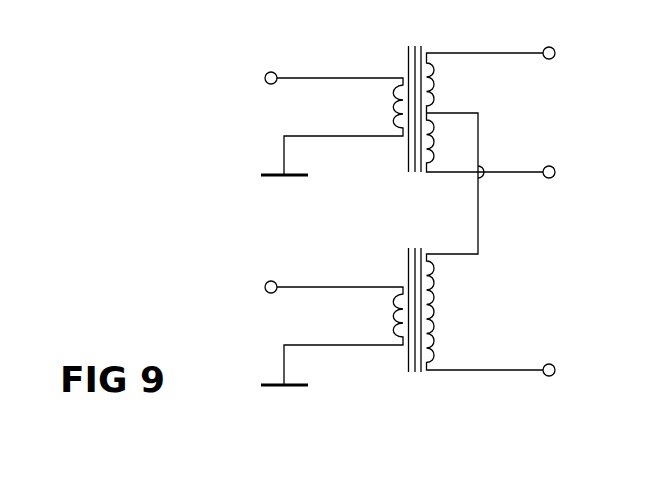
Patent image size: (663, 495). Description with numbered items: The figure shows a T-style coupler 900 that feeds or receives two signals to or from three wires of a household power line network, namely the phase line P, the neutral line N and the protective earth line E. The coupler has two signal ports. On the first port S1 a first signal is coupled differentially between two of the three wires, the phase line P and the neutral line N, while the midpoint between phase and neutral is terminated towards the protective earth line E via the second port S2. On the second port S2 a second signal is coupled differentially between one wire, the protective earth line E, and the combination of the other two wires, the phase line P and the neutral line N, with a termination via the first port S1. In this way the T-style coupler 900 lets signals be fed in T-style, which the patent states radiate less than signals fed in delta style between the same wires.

The T-style coupler 900 is at (196, 206).
The first signal port S1 is at (269, 63).
The second signal port S2 is at (276, 266).
The phase line P is at (550, 36).
The neutral line N is at (551, 155).
The protective earth line E is at (550, 355).